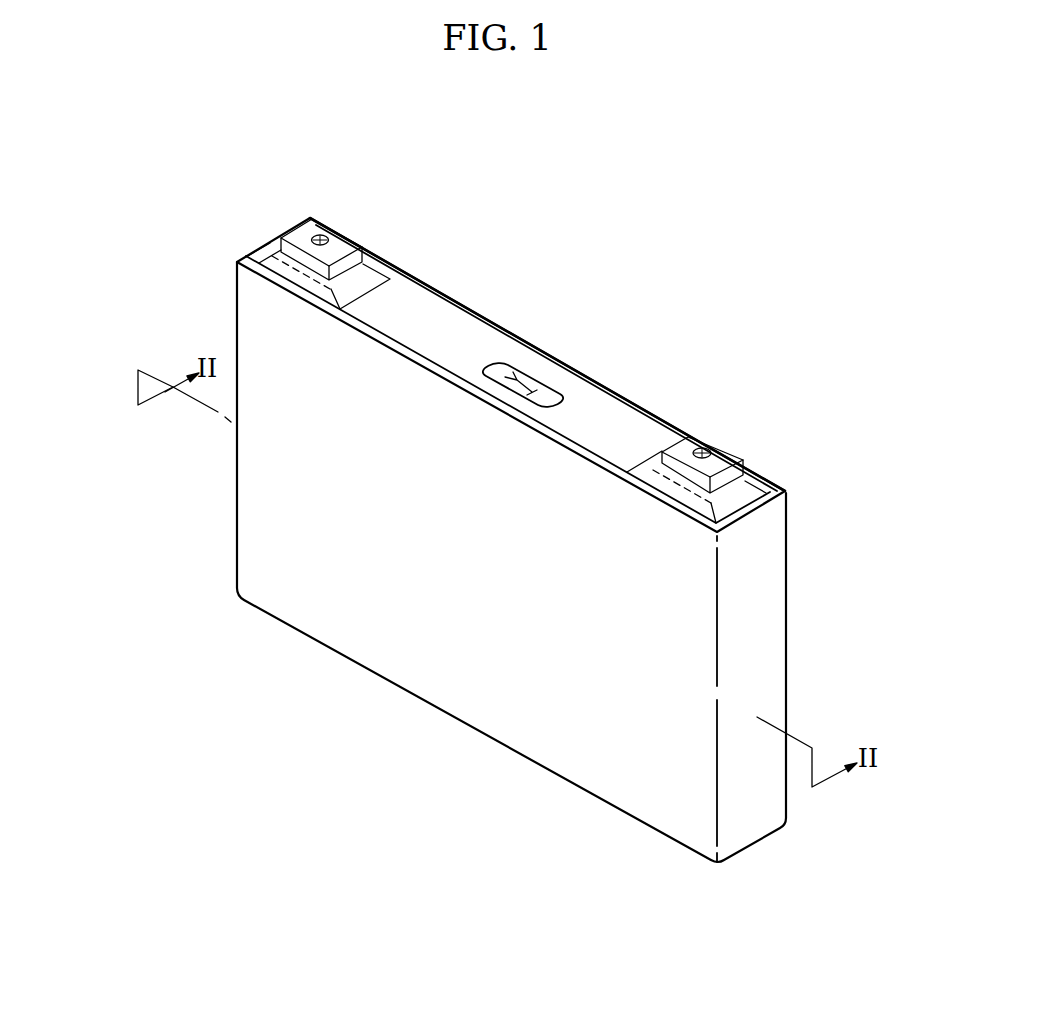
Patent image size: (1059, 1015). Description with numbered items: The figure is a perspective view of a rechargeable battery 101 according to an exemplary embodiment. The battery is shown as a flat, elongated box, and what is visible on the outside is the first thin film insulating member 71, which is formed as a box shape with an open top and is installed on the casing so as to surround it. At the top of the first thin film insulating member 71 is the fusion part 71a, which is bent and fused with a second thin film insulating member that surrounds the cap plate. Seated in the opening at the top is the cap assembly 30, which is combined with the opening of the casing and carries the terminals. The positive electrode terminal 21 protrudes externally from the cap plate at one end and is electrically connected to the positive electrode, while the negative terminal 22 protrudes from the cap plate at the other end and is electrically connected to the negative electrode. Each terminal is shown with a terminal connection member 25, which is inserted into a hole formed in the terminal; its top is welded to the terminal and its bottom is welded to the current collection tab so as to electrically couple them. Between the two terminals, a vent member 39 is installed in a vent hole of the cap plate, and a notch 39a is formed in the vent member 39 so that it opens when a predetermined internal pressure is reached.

The rechargeable battery 101 is at (527, 181).
The first thin film insulating member 71 is at (465, 687).
The fusion part 71a is at (414, 351).
The cap assembly 30 is at (620, 414).
The positive electrode terminal 21 is at (726, 460).
The negative terminal 22 is at (350, 247).
The terminal connection member 25 is at (323, 233).
The vent member 39 is at (519, 370).
The notch 39a is at (532, 382).